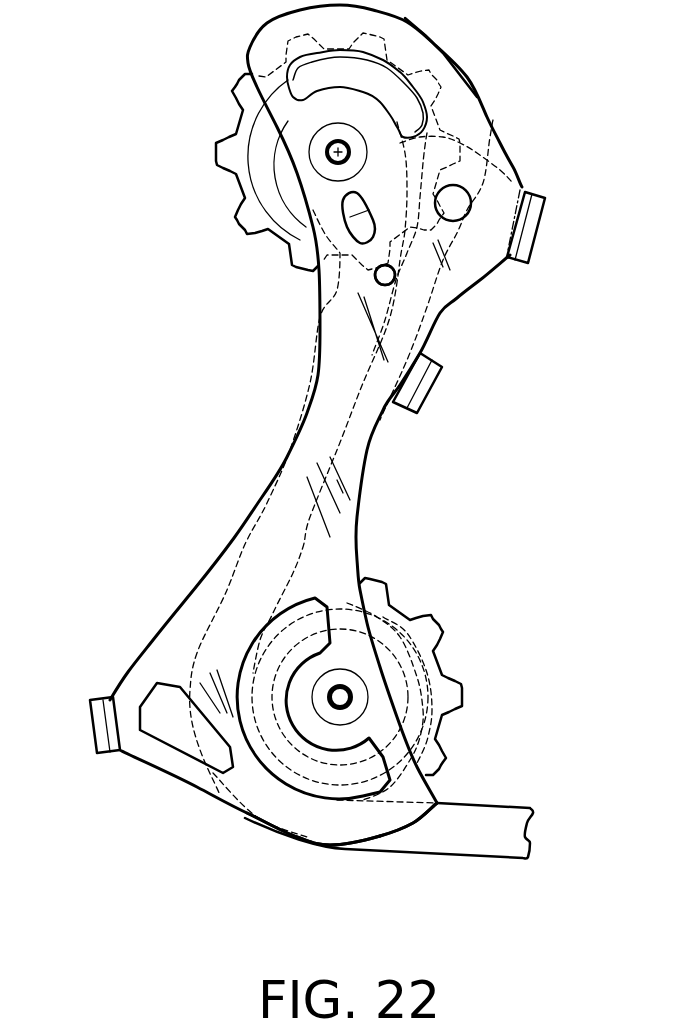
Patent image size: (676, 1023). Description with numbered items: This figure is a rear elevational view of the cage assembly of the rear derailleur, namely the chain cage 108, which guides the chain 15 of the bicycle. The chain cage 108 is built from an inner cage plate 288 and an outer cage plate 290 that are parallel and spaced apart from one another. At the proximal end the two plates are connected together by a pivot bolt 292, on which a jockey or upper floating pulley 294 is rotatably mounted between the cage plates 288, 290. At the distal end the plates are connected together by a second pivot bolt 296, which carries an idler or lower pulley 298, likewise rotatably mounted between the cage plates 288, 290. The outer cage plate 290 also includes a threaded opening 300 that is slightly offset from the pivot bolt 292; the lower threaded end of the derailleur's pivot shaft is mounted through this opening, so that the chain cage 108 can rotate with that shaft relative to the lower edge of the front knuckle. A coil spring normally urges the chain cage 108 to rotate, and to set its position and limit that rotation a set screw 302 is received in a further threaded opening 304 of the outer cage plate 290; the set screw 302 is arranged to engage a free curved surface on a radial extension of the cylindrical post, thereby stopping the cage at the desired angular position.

The chain cage 108 is at (158, 422).
The chain 15 is at (470, 827).
The inner cage plate 288 is at (343, 813).
The outer cage plate 290 is at (413, 823).
The pivot bolt 292 is at (327, 147).
The jockey or upper floating pulley 294 is at (240, 205).
The pivot bolt 296 is at (347, 687).
The idler or lower pulley 298 is at (437, 620).
The threaded opening 300 is at (448, 182).
The set screw 302 is at (378, 275).
The threaded opening 304 is at (395, 290).